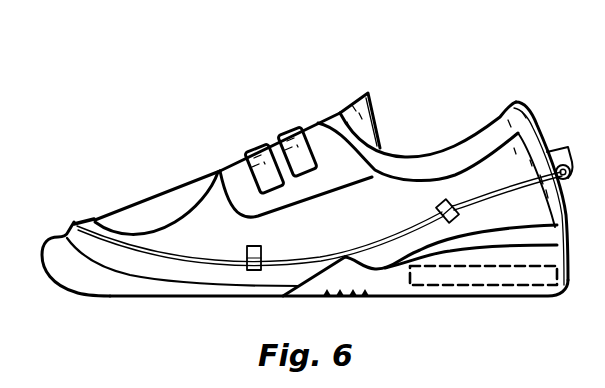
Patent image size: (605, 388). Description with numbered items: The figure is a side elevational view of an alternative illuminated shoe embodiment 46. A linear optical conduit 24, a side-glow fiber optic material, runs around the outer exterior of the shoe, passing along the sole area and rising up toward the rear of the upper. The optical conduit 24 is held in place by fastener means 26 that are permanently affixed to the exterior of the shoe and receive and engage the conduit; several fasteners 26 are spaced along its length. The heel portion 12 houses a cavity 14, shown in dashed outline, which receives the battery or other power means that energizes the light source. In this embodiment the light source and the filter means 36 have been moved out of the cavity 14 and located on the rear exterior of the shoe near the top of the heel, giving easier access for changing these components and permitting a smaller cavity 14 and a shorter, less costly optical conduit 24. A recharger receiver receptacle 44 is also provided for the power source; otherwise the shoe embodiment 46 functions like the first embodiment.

The heel portion 12 is at (388, 285).
The cavity 14 is at (495, 286).
The linear optical conduit 24 is at (289, 258).
The fastener means 26 is at (94, 218).
The filter means 36 is at (560, 152).
The recharger receiver receptacle 44 is at (604, 347).
The shoe embodiment 46 is at (541, 76).